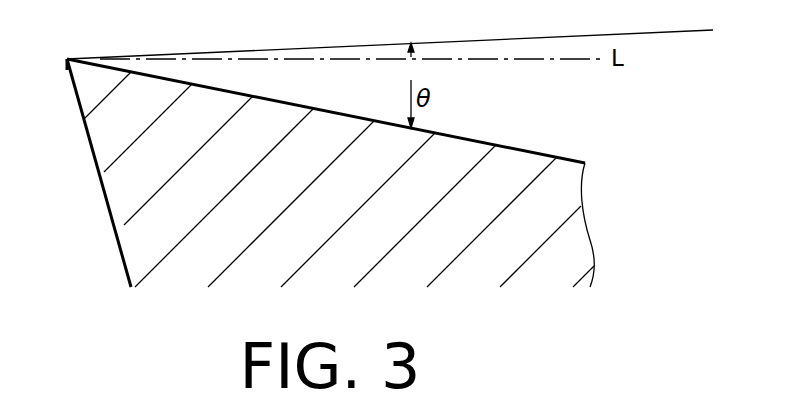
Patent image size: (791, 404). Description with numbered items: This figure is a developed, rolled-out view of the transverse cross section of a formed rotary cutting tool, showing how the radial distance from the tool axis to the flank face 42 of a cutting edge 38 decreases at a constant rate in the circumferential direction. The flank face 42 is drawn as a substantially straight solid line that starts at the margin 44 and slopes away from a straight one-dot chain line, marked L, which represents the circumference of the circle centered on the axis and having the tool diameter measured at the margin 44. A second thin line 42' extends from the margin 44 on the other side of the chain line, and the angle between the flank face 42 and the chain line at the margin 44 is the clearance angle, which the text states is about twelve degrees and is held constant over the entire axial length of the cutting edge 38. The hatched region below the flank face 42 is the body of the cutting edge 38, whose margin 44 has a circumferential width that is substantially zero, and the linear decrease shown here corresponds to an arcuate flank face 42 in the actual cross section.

The cutting edge 38 is at (63, 246).
The flank face 42 is at (327, 111).
The reference line of surface 42' is at (413, 39).
The margin 44 is at (67, 59).